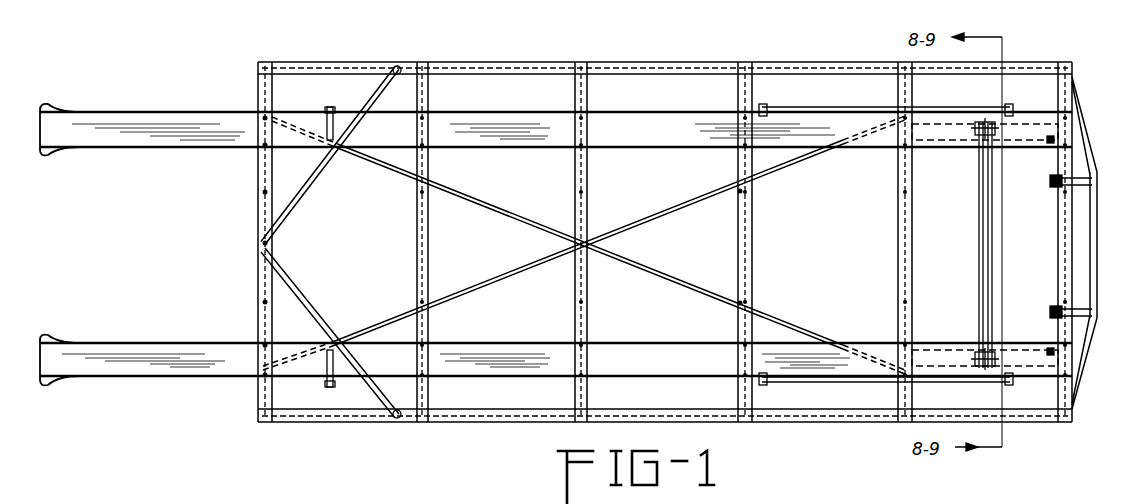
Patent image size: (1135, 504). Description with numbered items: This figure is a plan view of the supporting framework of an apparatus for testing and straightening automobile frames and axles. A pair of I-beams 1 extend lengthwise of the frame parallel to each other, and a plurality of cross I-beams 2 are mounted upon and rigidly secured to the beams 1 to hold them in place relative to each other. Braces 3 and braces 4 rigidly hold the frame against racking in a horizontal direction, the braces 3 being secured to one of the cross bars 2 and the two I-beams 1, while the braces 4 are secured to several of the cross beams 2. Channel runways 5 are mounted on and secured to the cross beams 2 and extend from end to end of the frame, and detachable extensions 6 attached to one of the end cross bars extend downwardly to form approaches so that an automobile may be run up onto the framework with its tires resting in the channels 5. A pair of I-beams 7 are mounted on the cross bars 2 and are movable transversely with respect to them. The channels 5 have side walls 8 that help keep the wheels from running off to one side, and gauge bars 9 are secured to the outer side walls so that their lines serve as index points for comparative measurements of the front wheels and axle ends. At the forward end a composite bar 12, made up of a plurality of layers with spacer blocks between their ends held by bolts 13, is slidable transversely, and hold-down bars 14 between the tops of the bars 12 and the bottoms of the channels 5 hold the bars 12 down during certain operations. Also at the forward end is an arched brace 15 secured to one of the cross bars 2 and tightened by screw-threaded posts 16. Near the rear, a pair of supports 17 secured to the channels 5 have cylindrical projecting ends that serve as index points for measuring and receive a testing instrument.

The I-beam 1 is at (484, 63).
The cross I-beam 2 is at (258, 87).
The brace 3 is at (282, 213).
The brace 4 is at (540, 262).
The channel runway 5 is at (678, 126).
The detachable extension 6 is at (224, 141).
The I-beam 7 is at (734, 196).
The side wall 8 is at (626, 116).
The gauge bar 9 is at (851, 109).
The composite bar 12 is at (983, 240).
The bolt 13 is at (976, 133).
The hold-down bar 14 is at (1033, 133).
The arched brace 15 is at (1100, 248).
The screw-threaded post 16 is at (1083, 188).
The support 17 is at (333, 108).